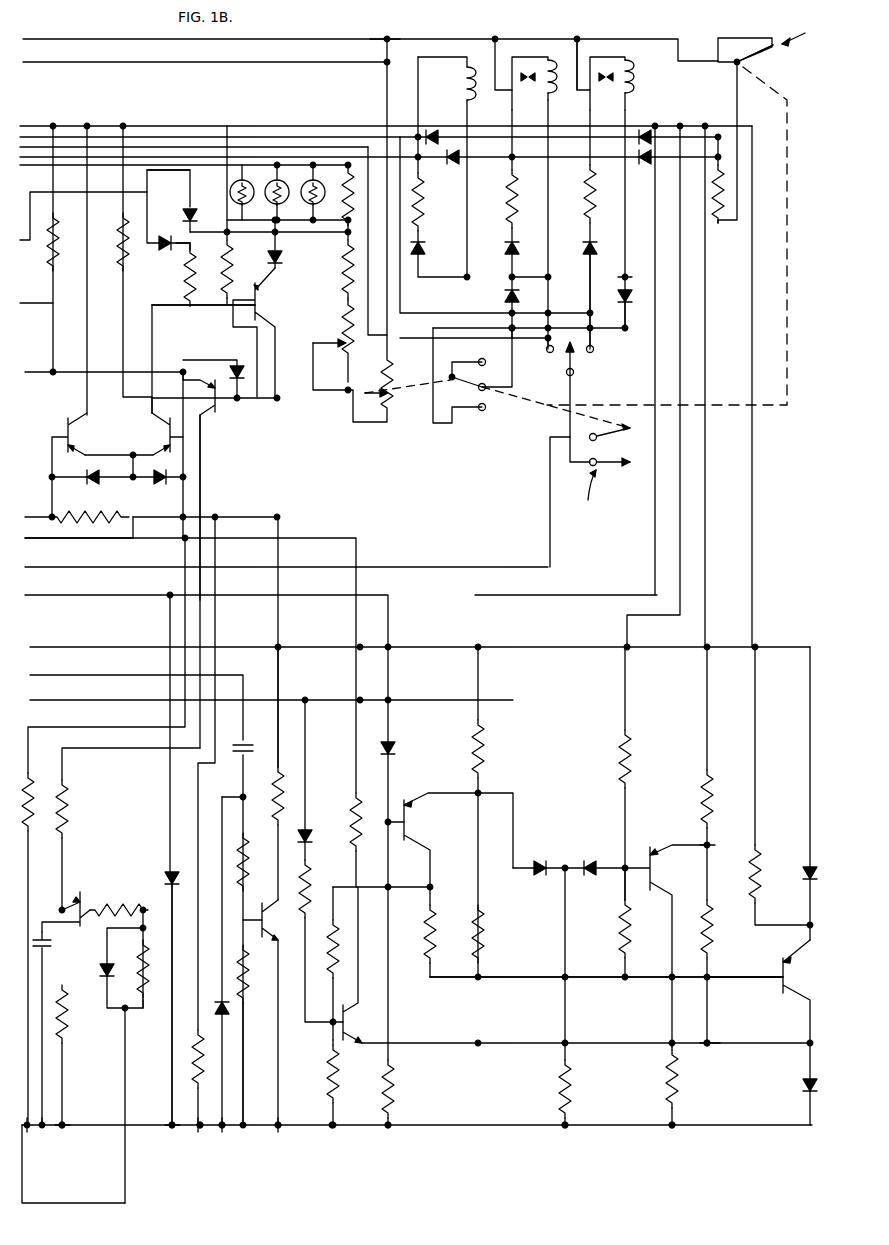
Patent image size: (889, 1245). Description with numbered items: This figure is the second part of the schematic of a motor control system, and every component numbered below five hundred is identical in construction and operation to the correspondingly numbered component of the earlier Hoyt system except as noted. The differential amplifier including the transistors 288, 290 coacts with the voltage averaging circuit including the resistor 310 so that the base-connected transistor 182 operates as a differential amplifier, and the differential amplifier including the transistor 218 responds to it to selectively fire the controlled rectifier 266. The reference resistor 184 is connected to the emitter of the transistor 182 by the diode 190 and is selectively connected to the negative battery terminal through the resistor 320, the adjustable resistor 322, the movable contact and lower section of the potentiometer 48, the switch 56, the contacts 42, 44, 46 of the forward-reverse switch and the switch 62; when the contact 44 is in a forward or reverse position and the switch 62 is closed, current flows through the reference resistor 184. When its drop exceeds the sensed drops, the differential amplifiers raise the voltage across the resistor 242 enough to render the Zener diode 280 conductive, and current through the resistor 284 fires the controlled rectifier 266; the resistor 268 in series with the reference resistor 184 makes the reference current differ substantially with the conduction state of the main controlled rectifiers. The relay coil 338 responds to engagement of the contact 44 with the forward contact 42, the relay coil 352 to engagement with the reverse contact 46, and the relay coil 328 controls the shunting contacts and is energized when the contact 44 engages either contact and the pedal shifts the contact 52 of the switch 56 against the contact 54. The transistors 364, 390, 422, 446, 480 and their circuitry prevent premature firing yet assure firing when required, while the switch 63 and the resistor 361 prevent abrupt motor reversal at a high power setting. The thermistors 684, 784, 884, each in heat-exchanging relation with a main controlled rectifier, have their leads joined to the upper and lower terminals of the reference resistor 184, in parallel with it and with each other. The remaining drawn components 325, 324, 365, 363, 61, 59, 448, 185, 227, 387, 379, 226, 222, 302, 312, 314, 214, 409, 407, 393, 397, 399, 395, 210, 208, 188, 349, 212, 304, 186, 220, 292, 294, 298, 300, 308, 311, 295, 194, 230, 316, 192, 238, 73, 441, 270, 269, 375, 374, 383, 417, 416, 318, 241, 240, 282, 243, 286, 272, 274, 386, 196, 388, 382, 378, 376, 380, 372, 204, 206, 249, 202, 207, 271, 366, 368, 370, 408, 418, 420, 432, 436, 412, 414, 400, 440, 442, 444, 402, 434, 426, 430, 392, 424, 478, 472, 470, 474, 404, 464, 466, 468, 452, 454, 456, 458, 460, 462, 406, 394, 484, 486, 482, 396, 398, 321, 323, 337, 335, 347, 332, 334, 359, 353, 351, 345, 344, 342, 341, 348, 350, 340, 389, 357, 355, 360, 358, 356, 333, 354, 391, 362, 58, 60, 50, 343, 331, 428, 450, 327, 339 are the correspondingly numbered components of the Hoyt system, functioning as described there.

The supply line 325 is at (38, 39).
The junction 324 is at (382, 39).
The supply line 365 is at (72, 62).
The conductor 363 is at (387, 66).
The terminal 61 is at (775, 38).
The switch 63 is at (803, 34).
The contact arm 59 is at (756, 62).
The switch 56 is at (486, 411).
The bus line 448 is at (386, 118).
The bus line 185 is at (155, 137).
The bus line 227 is at (198, 140).
The bus line 387 is at (248, 148).
The bus line 379 is at (292, 162).
The conductor 226 is at (53, 126).
The resistor 222 is at (52, 263).
The conductor 302 is at (87, 126).
The conductor 312 is at (123, 126).
The resistor 314 is at (122, 236).
The conductor 214 is at (22, 306).
The conductor 409 is at (26, 203).
The conductor 407 is at (147, 178).
The diode 393 is at (192, 205).
The diode 397 is at (154, 236).
The conductor 399 is at (178, 250).
The conductor 395 is at (194, 232).
The resistor 210 is at (186, 280).
The thermistor 684 is at (227, 128).
The lamp 208 is at (232, 194).
The lamp 188 is at (287, 193).
The thermistor 784 is at (311, 133).
The thermistor 884 is at (310, 178).
The reference resistor 184 is at (346, 163).
The conductor 349 is at (418, 156).
The resistor 268 is at (230, 272).
The conductor 212 is at (180, 305).
The conductor 304 is at (153, 305).
The conductor 186 is at (279, 244).
The diode 190 is at (284, 264).
The transistor 182 is at (262, 304).
The resistor 320 is at (348, 280).
The adjustable resistor 322 is at (338, 342).
The potentiometer 48 is at (370, 400).
The conductor 220 is at (23, 372).
The transistor 288 is at (66, 432).
The transistor 290 is at (164, 432).
The conductor 292 is at (100, 443).
The junction 294 is at (144, 454).
The diode 298 is at (90, 483).
The diode 300 is at (160, 483).
The junction 308 is at (51, 515).
The resistor 310 is at (93, 508).
The conductor 311 is at (26, 517).
The conductor 295 is at (62, 538).
The conductor 194 is at (214, 516).
The diode 230 is at (252, 362).
The transistor 218 is at (216, 415).
The conductor 316 is at (200, 456).
The conductor 192 is at (280, 400).
The conductor 238 is at (185, 538).
The conductor 73 is at (32, 568).
The conductor 441 is at (32, 595).
The conductor 270 is at (170, 600).
The conductor 269 is at (278, 602).
The conductor 375 is at (58, 647).
The conductor 374 is at (288, 647).
The conductor 383 is at (58, 675).
The conductor 417 is at (58, 700).
The conductor 416 is at (305, 700).
The resistor 318 is at (34, 780).
The resistor 241 is at (69, 809).
The controlled rectifier 266 is at (171, 872).
The Zener diode 280 is at (100, 882).
The transistor 240 is at (68, 894).
The resistor 282 is at (115, 906).
The capacitor 243 is at (48, 920).
The resistor 284 is at (143, 976).
The diode 286 is at (100, 970).
The conductor 272 is at (125, 1008).
The conductor 274 is at (143, 1008).
The resistor 242 is at (63, 1035).
The conductor 386 is at (242, 797).
The resistor 196 is at (197, 1070).
The diode 388 is at (228, 1012).
The capacitor 382 is at (248, 742).
The resistor 378 is at (248, 856).
The conductor 376 is at (244, 918).
The resistor 380 is at (243, 994).
The resistor 372 is at (272, 784).
The transistor 364 is at (262, 907).
The junction 204 is at (62, 1124).
The junction 206 is at (184, 1124).
The junction 249 is at (42, 1127).
The junction 202 is at (27, 1127).
The ground line 207 is at (146, 1127).
The conductor 271 is at (58, 1203).
The junction 366 is at (200, 1127).
The junction 368 is at (223, 1127).
The junction 370 is at (280, 1126).
The resistor 408 is at (355, 798).
The diode 418 is at (308, 838).
The resistor 420 is at (309, 884).
The conductor 432 is at (430, 887).
The resistor 436 is at (333, 970).
The junction 412 is at (332, 1023).
The transistor 390 is at (345, 1023).
The resistor 414 is at (331, 1060).
The junction 400 is at (333, 1126).
The diode 440 is at (390, 744).
The conductor 442 is at (394, 818).
The transistor 422 is at (406, 830).
The resistor 444 is at (394, 1092).
The junction 402 is at (388, 1127).
The resistor 434 is at (430, 912).
The resistor 426 is at (475, 740).
The resistor 430 is at (480, 928).
The conductor 392 is at (478, 1043).
The conductor 424 is at (513, 790).
The diode 478 is at (538, 862).
The conductor 472 is at (566, 868).
The diode 470 is at (591, 862).
The resistor 474 is at (564, 1108).
The junction 404 is at (566, 1127).
The resistor 464 is at (634, 750).
The conductor 466 is at (622, 890).
The resistor 468 is at (623, 936).
The transistor 446 is at (650, 876).
The resistor 452 is at (703, 814).
The junction 454 is at (710, 845).
The resistor 456 is at (712, 952).
The conductor 458 is at (626, 980).
The junction 460 is at (672, 977).
The resistor 462 is at (667, 1086).
The junction 406 is at (671, 1127).
The conductor 394 is at (706, 1044).
The resistor 484 is at (756, 865).
The diode 486 is at (812, 871).
The junction 482 is at (812, 925).
The transistor 480 is at (789, 974).
The junction 396 is at (812, 1043).
The diode 398 is at (802, 1090).
The conductor 321 is at (494, 38).
The conductor 323 is at (577, 38).
The relay coil 328 is at (464, 92).
The diode 337 is at (422, 137).
The diode 335 is at (452, 150).
The resistor 347 is at (420, 187).
The conductor 332 is at (418, 214).
The diode 334 is at (420, 250).
The junction 359 is at (467, 279).
The relay coil 338 is at (564, 58).
The relay contact 353 is at (526, 76).
The conductor 351 is at (548, 100).
The conductor 345 is at (511, 158).
The resistor 344 is at (512, 212).
The diode 342 is at (504, 248).
The conductor 341 is at (512, 277).
The diode 348 is at (508, 297).
The conductor 350 is at (511, 328).
The conductor 340 is at (589, 310).
The contact 389 is at (548, 344).
The relay coil 357 is at (626, 61).
The relay coil 352 is at (634, 74).
The conductor 355 is at (585, 38).
The resistor 360 is at (591, 187).
The diode 358 is at (585, 250).
The conductor 356 is at (592, 264).
The conductor 333 is at (626, 112).
The junction 354 is at (628, 277).
The diode 391 is at (622, 296).
The conductor 362 is at (628, 322).
The reverse contact 46 is at (594, 350).
The forward contact 42 is at (566, 368).
The movable contact 44 is at (576, 372).
The switch 58 is at (608, 442).
The switch 60 is at (626, 470).
The switch 62 is at (590, 512).
The contact 50 is at (451, 367).
The contact 52 is at (478, 386).
The contact 54 is at (456, 408).
The diodes 343 is at (644, 164).
The conductor 331 is at (655, 126).
The conductor 428 is at (680, 126).
The conductor 450 is at (705, 126).
The conductor 327 is at (718, 137).
The conductor 339 is at (718, 157).
The resistor 361 is at (718, 223).